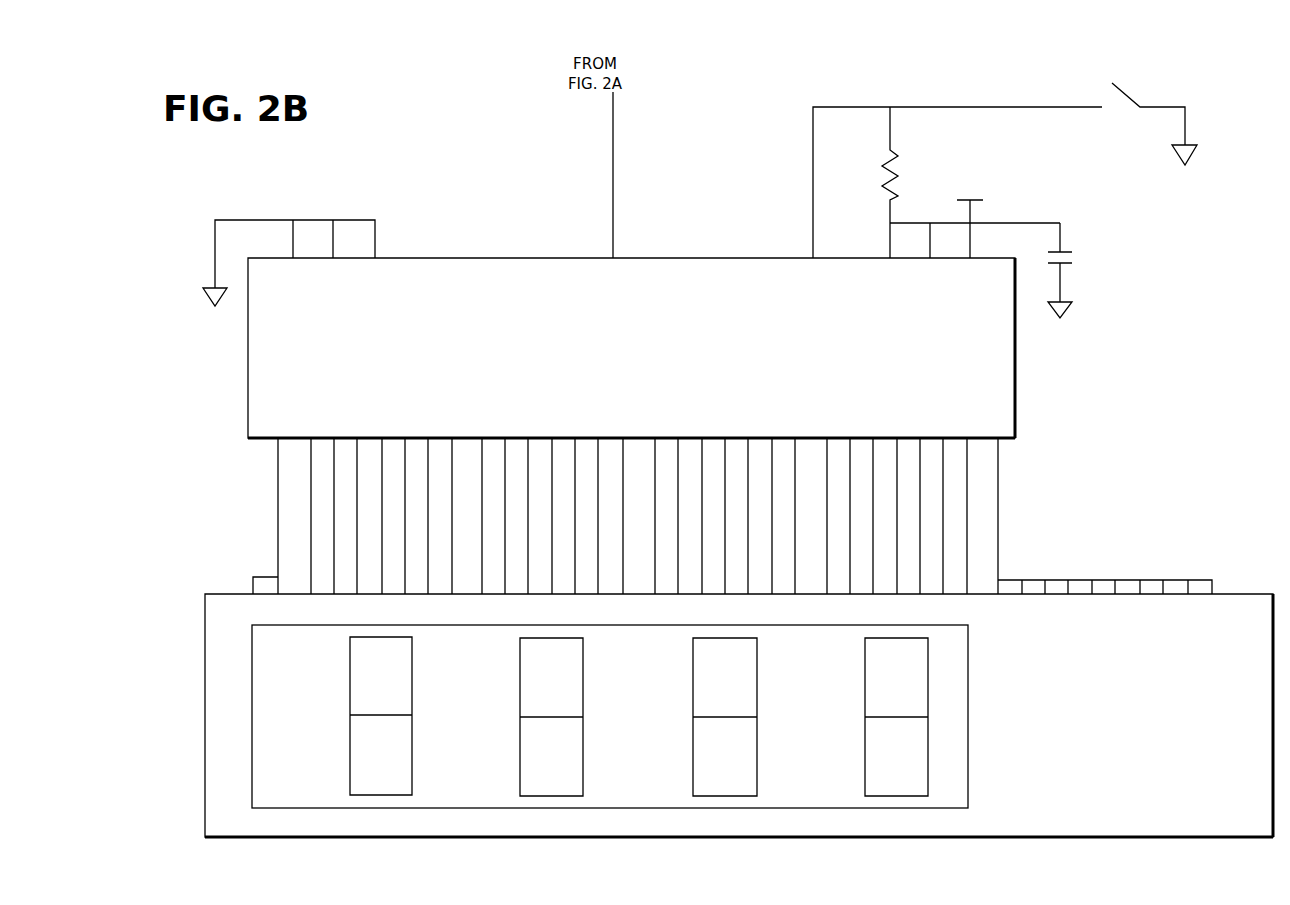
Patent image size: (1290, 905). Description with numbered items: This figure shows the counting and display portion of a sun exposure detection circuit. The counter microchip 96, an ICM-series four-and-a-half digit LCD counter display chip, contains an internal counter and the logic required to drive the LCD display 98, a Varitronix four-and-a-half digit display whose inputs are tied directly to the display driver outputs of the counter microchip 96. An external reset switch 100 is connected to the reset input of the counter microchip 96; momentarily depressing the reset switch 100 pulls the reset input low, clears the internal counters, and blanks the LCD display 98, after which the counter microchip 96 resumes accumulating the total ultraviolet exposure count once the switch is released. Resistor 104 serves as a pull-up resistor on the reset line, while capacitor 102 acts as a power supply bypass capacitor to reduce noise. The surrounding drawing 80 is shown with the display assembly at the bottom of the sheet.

The LCD display U3 (Varitronix VI-502-DP-RC-S) 80 is at (699, 723).
The counter microchip 96 is at (706, 368).
The LCD display 98 is at (652, 788).
The reset switch 100 is at (978, 89).
The capacitor 102 is at (1105, 306).
The resistor 104 is at (982, 218).